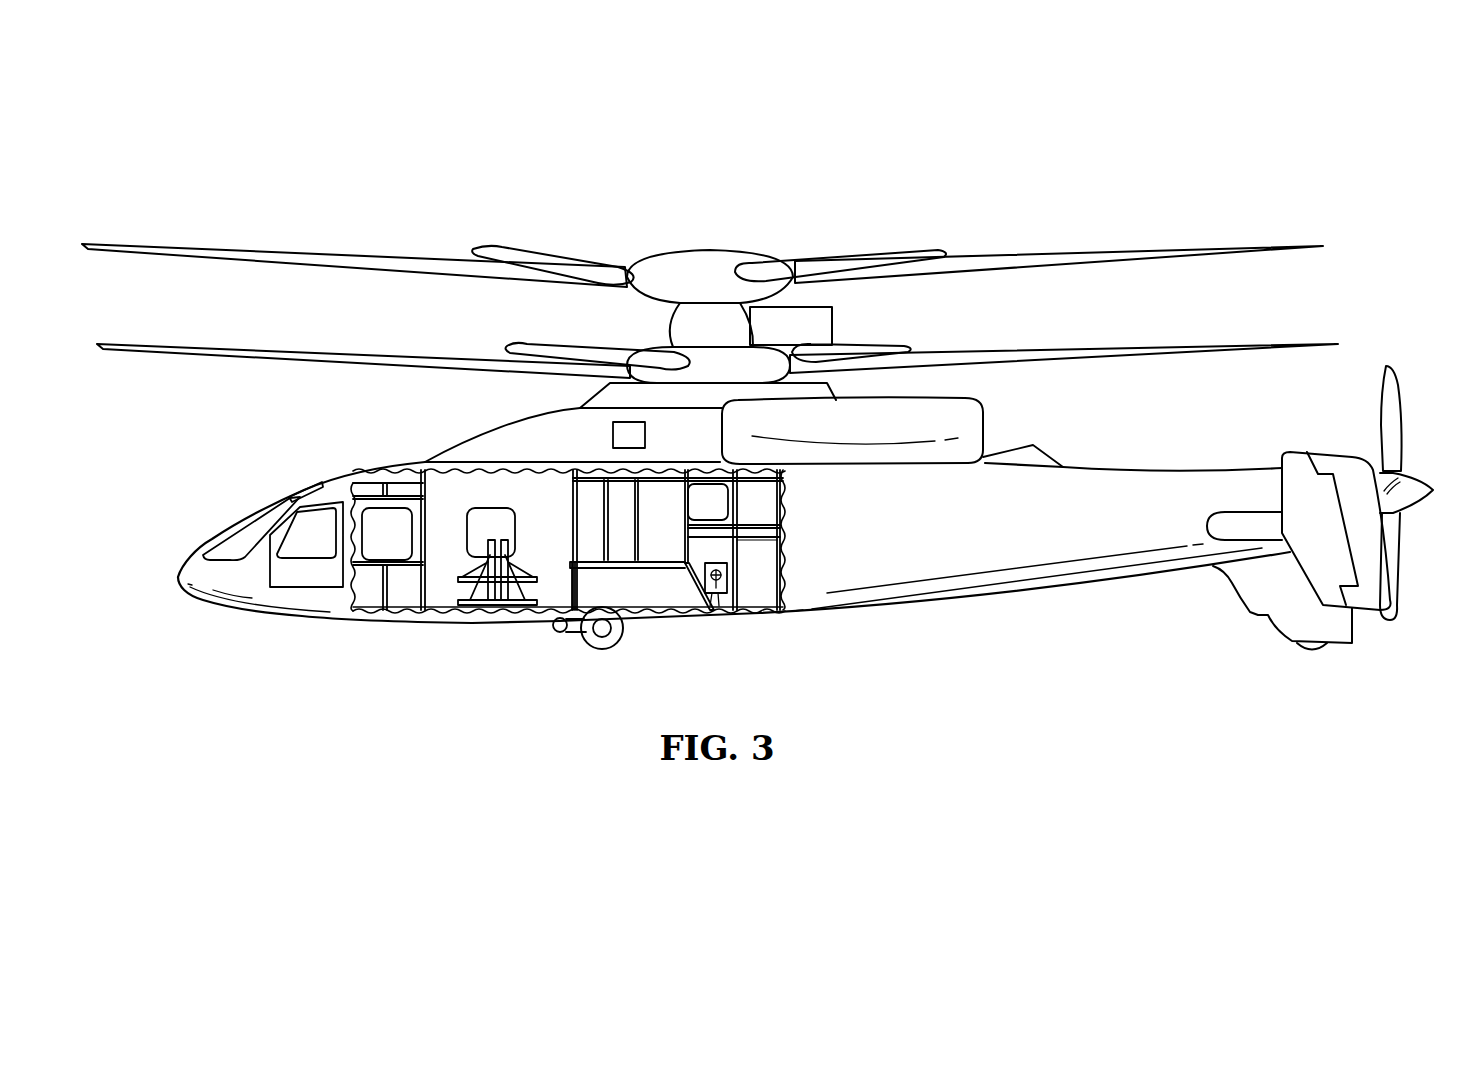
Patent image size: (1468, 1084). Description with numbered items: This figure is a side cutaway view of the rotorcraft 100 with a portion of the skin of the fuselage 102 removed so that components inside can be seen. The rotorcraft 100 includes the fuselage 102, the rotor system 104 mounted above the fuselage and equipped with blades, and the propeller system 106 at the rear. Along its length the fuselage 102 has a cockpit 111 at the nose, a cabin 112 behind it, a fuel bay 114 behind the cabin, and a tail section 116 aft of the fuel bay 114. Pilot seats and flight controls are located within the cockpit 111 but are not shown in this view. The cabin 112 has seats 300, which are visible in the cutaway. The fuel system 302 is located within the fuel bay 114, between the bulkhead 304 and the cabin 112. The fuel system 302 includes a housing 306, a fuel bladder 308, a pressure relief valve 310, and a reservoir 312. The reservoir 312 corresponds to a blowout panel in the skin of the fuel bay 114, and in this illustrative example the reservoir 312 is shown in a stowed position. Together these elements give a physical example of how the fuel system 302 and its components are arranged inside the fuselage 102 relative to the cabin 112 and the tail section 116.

The rotorcraft 100 is at (242, 418).
The fuselage 102 is at (320, 622).
The rotor system 104 is at (759, 225).
The propeller system 106 is at (1414, 371).
The cockpit 111 is at (236, 546).
The cabin 112 is at (481, 489).
The fuel bay 114 is at (806, 537).
The tail section 116 is at (1070, 590).
The seats 300 is at (527, 552).
The fuel system 302 is at (758, 507).
The bulkhead 304 is at (783, 588).
The housing 306 is at (693, 588).
The fuel bladder 308 is at (760, 547).
The pressure relief valve 310 is at (721, 594).
The reservoir 312 is at (717, 594).